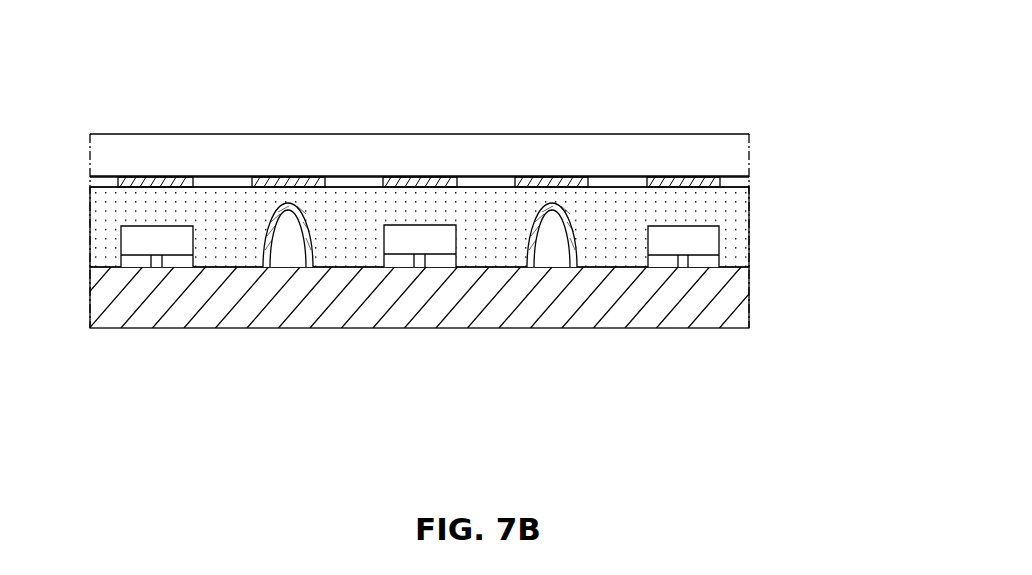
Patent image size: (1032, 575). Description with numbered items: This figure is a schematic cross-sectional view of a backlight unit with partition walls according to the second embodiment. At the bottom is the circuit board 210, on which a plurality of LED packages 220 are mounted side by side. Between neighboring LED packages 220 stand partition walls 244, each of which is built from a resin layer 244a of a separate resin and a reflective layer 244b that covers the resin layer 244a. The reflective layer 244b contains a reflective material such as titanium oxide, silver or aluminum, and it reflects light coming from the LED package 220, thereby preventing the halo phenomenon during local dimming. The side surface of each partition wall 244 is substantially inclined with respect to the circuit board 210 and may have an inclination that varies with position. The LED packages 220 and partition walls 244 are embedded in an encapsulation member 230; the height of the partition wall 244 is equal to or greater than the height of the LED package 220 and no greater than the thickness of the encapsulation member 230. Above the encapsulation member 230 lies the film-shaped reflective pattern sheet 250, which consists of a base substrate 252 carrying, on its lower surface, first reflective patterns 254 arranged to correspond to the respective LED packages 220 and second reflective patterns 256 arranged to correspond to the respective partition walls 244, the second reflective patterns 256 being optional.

The circuit board 210 is at (732, 307).
The LED package 220 is at (710, 240).
The encapsulation member 230 is at (732, 208).
The partition wall 244 is at (420, 324).
The resin layer 244a is at (288, 250).
The reflective layer 244b is at (315, 248).
The reflective pattern sheet 250 is at (419, 96).
The base substrate 252 is at (363, 152).
The first reflective pattern 254 is at (435, 177).
The second reflective pattern 256 is at (543, 177).